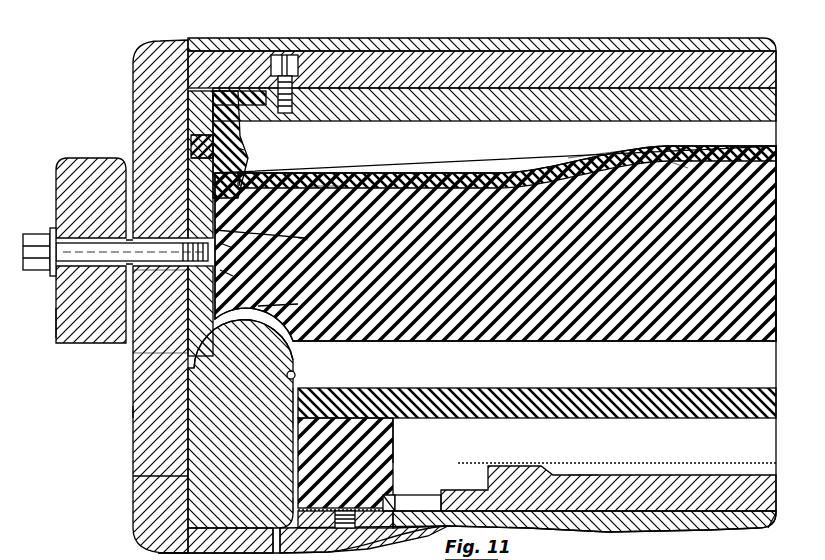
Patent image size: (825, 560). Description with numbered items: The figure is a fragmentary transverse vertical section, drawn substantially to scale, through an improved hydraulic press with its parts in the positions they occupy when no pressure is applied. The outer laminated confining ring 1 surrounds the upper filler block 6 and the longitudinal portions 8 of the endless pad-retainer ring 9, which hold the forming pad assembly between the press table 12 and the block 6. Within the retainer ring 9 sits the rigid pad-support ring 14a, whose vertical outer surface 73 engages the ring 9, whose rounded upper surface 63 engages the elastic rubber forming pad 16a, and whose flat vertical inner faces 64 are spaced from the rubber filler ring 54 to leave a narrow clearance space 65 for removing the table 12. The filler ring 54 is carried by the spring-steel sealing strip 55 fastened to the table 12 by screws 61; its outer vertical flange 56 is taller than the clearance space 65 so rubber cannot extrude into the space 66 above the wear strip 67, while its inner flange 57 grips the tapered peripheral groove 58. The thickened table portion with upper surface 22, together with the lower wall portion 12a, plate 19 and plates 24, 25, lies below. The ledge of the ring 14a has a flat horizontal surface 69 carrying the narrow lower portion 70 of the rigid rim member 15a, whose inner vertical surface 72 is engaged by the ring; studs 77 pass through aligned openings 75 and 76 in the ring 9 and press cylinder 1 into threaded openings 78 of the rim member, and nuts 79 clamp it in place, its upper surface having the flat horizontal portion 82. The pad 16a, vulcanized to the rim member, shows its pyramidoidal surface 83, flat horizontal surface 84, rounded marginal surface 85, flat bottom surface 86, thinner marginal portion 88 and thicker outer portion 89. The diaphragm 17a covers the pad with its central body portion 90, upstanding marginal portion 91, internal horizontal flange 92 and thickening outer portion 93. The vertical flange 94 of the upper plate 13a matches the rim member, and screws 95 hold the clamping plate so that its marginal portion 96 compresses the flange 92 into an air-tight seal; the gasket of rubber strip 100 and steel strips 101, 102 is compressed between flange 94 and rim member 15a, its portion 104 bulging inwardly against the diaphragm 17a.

The outer laminated confining ring 1 is at (48, 318).
The upper filler block 6 is at (480, 32).
The longitudinal portions of pad-retainer ring 8 is at (125, 70).
The pad-retainer ring 9 is at (125, 398).
The press table 12 is at (648, 522).
The lower wall portion 12a is at (576, 490).
The upper rigid metal plate 13a is at (610, 45).
The pad-support ring 14a is at (240, 462).
The rim member 15a is at (283, 226).
The elastic rubber forming pad 16a is at (592, 250).
The diaphragm 17a is at (462, 165).
The plate 19 is at (222, 540).
The upper surface of press table 22 is at (686, 504).
The plate 24 is at (110, 556).
The plate 25 is at (764, 536).
The rubber filler ring 54 is at (386, 432).
The sealing strip 55 is at (372, 520).
The outer vertical flange 56 is at (296, 494).
The inner flange 57 is at (400, 494).
The tapered peripheral groove 58 is at (386, 488).
The screws 61 is at (342, 522).
The rounded upper surface 63 is at (250, 298).
The flat vertical inner faces 64 is at (264, 408).
The clearance space 65 is at (316, 382).
The space above wear strip 66 is at (270, 508).
The wear strip 67 is at (290, 540).
The flat horizontal ledge surface 69 is at (243, 347).
The narrow lower portion of rim member 70 is at (160, 341).
The inner vertical surface of rim member 72 is at (312, 246).
The vertical outer surface 73 is at (125, 468).
The openings in retainer ring 75 is at (150, 234).
The openings in press cylinder 76 is at (91, 250).
The long studs 77 is at (160, 287).
The internally threaded openings 78 is at (215, 262).
The nuts 79 is at (33, 222).
The flat horizontal portion 82 is at (742, 258).
The pyramidoidal surface 83 is at (600, 152).
The flat horizontal surface 84 is at (378, 167).
The rounded marginal surface 85 is at (232, 166).
The bottom surface of pad 86 is at (668, 334).
The marginal portion of pad 88 is at (226, 250).
The outer portion of pad 89 is at (372, 258).
The main central body portion 90 is at (665, 152).
The upstanding marginal portion 91 is at (230, 132).
The internal horizontal flange 92 is at (239, 84).
The outer portion of diaphragm 93 is at (300, 182).
The vertical flange 94 is at (203, 83).
The screws 95 is at (292, 68).
The marginal portion of clamping plate 96 is at (178, 44).
The flexible elastic strip 100 is at (182, 140).
The upper steel strip 101 is at (182, 128).
The lower steel strip 102 is at (182, 150).
The bulging portion of sealing strip 104 is at (238, 142).